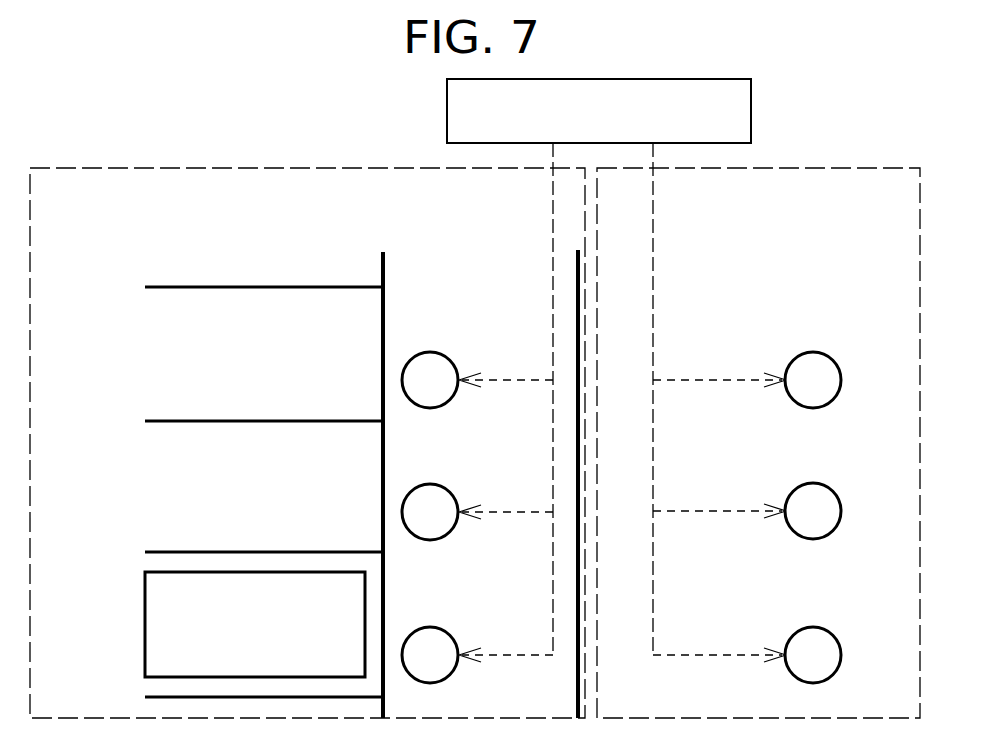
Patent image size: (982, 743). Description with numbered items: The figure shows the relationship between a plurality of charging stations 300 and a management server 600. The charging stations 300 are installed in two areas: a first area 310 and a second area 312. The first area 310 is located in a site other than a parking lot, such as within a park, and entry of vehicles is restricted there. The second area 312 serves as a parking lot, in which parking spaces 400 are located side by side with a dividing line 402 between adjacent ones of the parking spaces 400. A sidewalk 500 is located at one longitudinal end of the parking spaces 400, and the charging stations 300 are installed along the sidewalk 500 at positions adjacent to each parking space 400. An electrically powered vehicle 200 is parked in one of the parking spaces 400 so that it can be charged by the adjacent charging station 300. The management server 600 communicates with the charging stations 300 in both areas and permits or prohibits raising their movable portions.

The management server 600 is at (665, 79).
The second area 312 is at (75, 168).
The first area 310 is at (802, 167).
The sidewalk 500 is at (412, 270).
The parking space 400 is at (157, 315).
The dividing line 402 is at (253, 548).
The electrically powered vehicle 200 is at (145, 622).
The charging station 300 is at (443, 353).